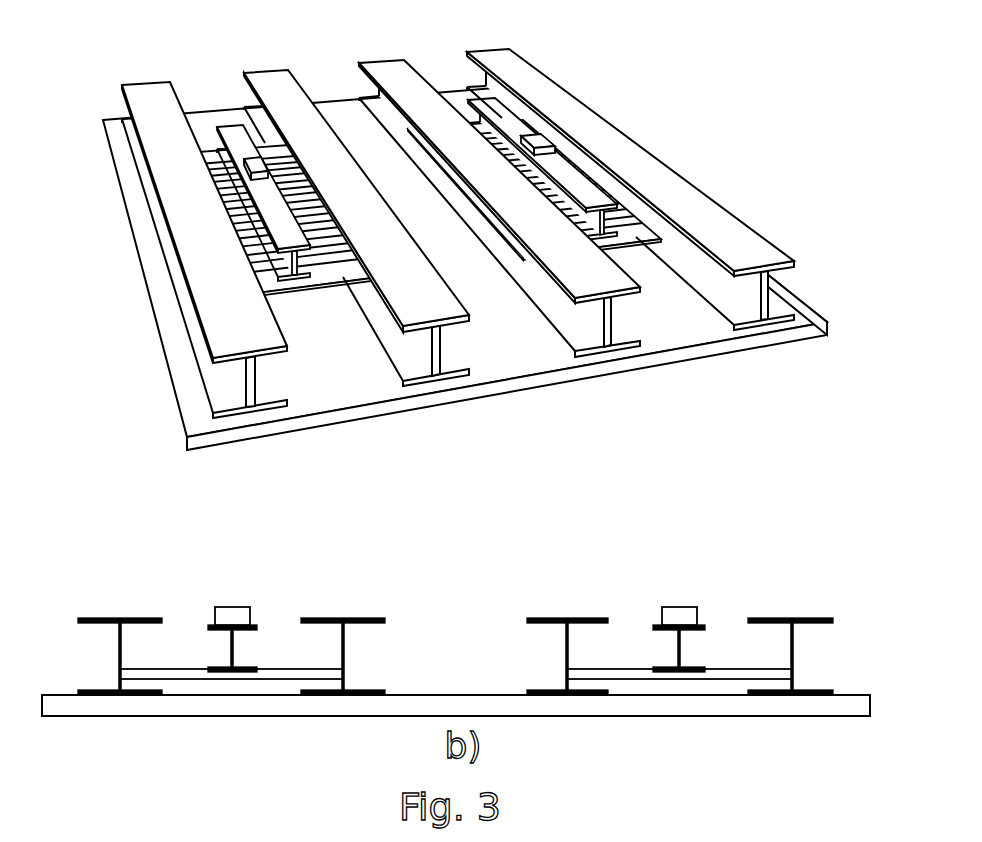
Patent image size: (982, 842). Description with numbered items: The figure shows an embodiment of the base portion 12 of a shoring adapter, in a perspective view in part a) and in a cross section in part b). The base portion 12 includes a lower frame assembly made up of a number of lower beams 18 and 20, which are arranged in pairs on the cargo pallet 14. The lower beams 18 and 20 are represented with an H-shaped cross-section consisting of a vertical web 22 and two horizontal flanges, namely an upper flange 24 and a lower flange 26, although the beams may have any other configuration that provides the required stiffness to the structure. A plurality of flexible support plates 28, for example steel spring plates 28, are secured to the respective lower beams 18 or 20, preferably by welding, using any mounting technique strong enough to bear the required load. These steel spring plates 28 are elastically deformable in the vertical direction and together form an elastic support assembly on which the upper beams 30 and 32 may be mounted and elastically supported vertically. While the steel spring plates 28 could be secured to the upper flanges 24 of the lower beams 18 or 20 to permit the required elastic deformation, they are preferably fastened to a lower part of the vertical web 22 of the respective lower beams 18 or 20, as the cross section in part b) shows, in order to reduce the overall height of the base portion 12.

The base portion 12 is at (446, 244).
The cargo pallet 14 is at (802, 343).
The lower beam 18 is at (763, 248).
The lower beam 20 is at (218, 393).
The vertical web 22 is at (118, 640).
The upper flange 24 is at (360, 618).
The lower flange 26 is at (370, 693).
The steel spring plate 28 is at (590, 165).
The upper beam 30 is at (505, 118).
The upper beam 32 is at (237, 137).